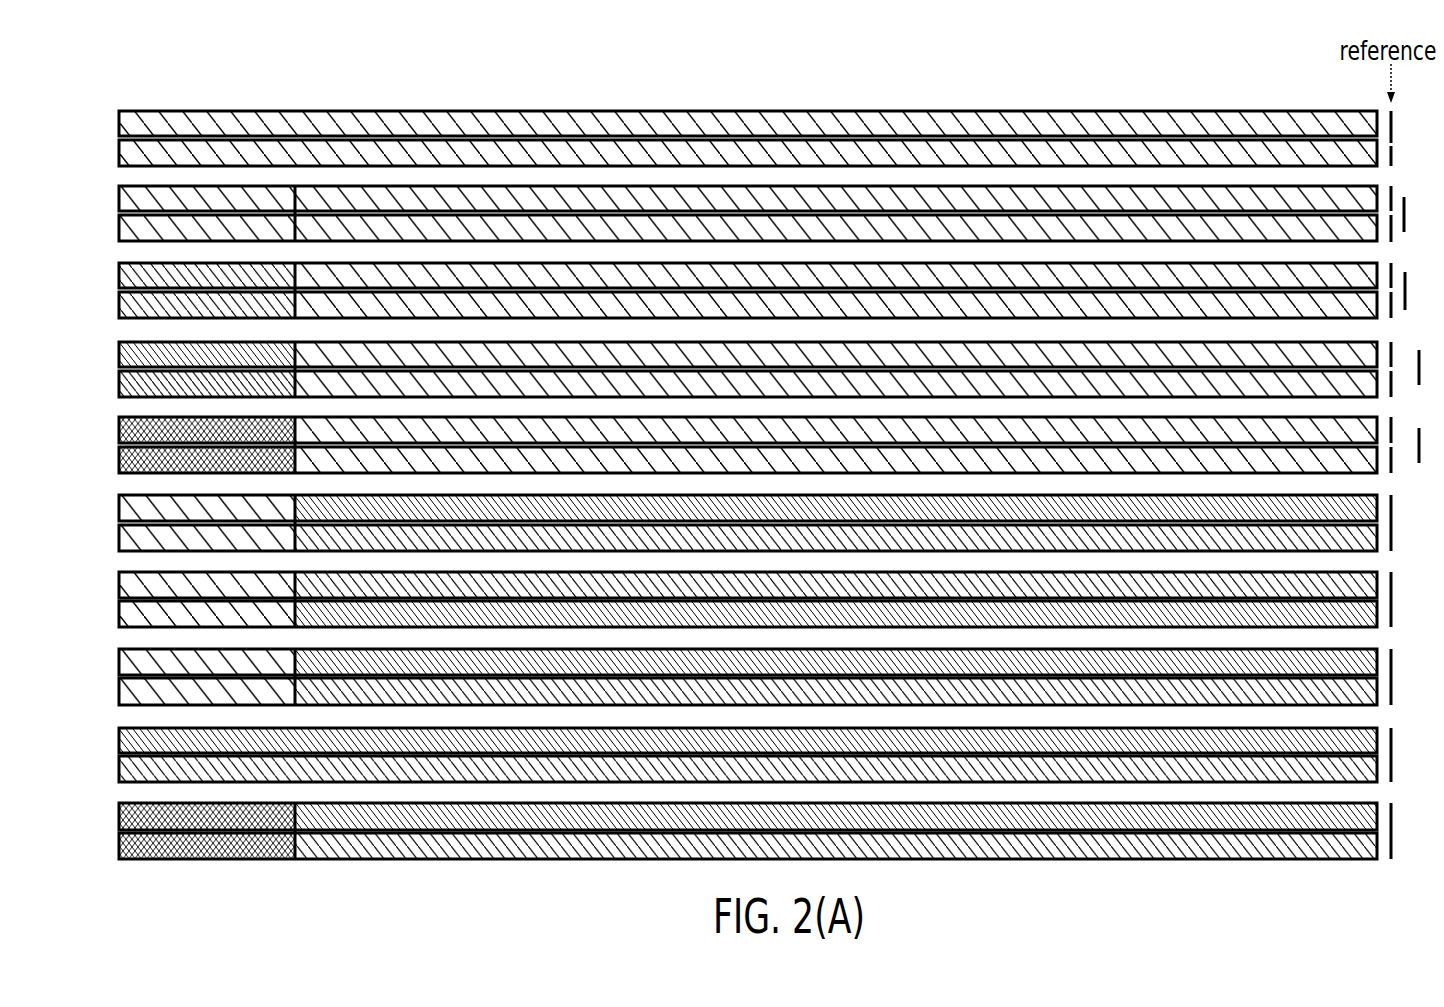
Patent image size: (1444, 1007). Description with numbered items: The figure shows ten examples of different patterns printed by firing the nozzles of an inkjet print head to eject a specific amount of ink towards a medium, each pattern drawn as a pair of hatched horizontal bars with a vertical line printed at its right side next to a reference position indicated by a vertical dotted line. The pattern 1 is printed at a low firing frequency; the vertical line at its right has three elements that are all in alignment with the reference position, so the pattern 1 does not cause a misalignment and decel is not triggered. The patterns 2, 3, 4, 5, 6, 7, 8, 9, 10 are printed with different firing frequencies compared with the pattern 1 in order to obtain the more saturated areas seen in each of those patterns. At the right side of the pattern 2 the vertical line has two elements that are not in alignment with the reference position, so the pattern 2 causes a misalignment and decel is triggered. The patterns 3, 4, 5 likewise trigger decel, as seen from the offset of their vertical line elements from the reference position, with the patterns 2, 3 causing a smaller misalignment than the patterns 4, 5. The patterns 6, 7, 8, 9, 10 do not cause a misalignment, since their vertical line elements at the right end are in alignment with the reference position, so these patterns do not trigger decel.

The pattern 1 is at (733, 138).
The pattern 2 is at (739, 214).
The pattern 3 is at (740, 290).
The pattern 4 is at (747, 369).
The pattern 5 is at (747, 445).
The pattern 6 is at (733, 523).
The pattern 7 is at (733, 599).
The pattern 8 is at (733, 677).
The pattern 9 is at (733, 755).
The pattern 10 is at (729, 831).